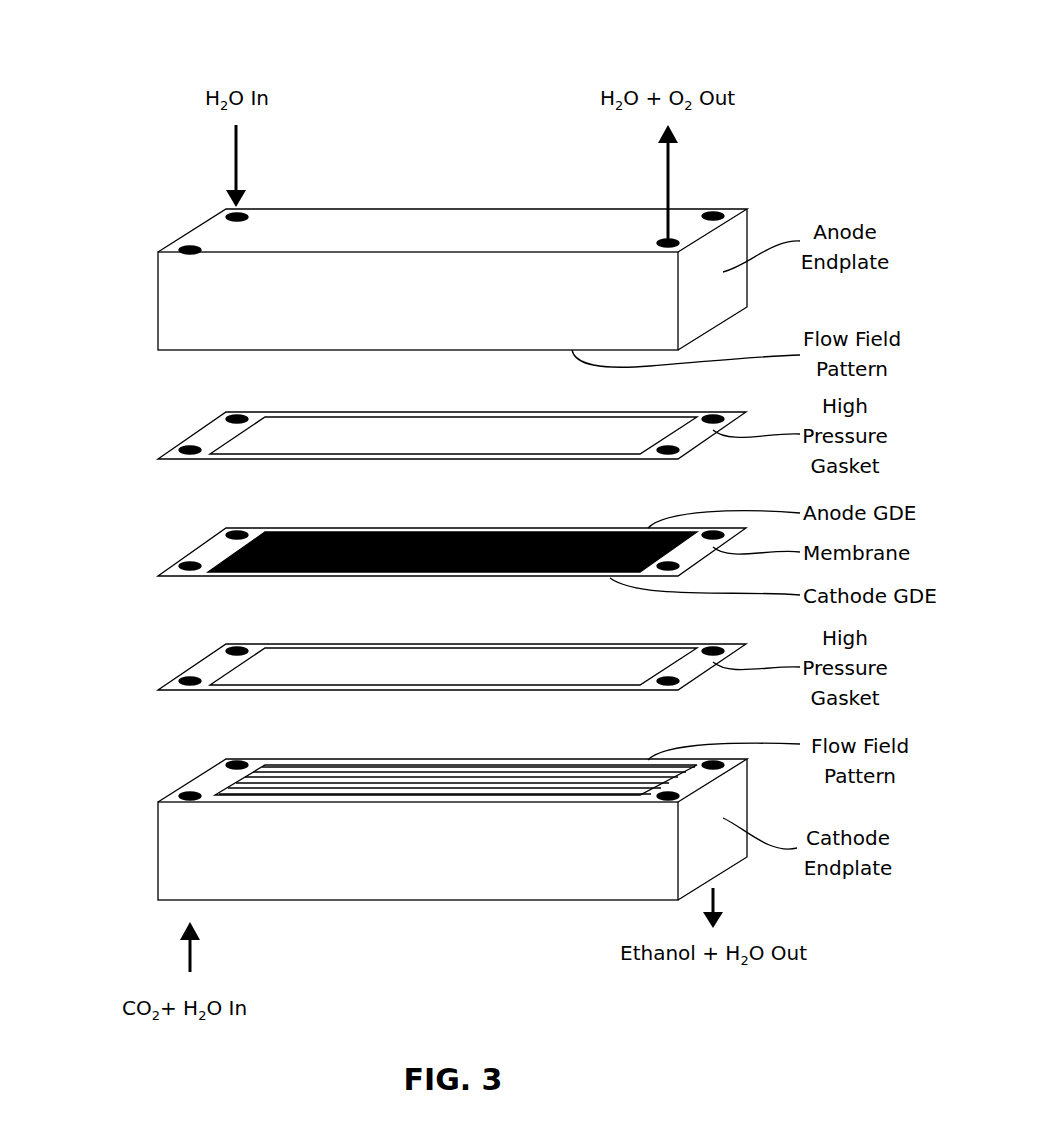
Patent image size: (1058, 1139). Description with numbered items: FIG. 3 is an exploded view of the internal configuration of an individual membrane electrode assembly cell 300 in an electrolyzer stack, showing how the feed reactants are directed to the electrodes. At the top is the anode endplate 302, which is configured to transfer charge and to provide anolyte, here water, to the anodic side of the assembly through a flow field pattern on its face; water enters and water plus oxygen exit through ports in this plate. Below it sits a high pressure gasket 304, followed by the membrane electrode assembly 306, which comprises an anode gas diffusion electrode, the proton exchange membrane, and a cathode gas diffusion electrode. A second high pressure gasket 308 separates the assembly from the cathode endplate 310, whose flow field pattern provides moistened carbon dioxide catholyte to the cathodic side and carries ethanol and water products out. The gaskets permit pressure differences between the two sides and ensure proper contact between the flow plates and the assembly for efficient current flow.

The electrochemical cell assembly 300 is at (448, 37).
The anode endplate 302 is at (157, 302).
The high pressure gasket 304 is at (200, 441).
The membrane with anode and cathode GDE 306 is at (197, 559).
The high pressure gasket 308 is at (200, 673).
The cathode endplate 310 is at (157, 851).